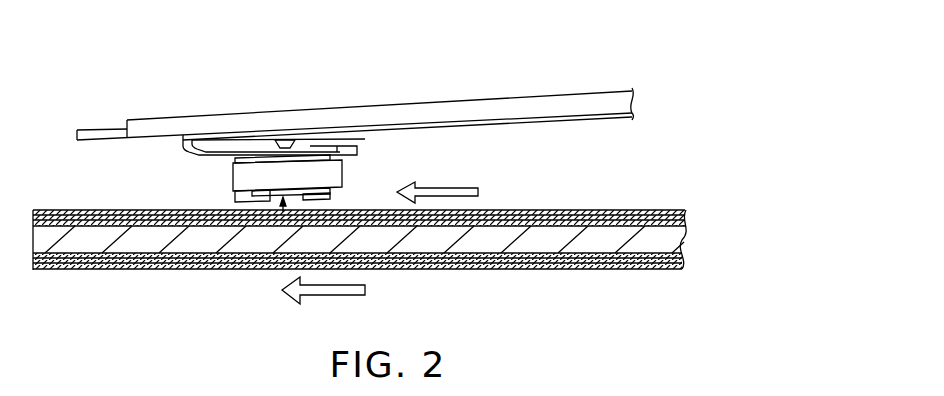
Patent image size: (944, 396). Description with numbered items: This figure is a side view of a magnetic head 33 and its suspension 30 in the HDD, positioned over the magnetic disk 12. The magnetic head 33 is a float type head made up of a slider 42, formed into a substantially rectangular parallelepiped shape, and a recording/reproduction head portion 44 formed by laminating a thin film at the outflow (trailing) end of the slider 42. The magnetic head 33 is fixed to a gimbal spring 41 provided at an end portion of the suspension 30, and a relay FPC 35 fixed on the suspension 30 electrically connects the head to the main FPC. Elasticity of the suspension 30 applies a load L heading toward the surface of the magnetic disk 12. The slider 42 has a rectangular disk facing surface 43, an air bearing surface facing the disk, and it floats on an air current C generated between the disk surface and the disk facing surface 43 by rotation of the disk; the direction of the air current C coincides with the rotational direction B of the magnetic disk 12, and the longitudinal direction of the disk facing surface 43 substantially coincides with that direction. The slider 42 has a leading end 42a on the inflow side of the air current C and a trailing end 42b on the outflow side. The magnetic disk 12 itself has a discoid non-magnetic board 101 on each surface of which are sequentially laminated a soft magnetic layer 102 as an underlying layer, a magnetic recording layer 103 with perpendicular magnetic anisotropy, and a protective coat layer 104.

The magnetic disk 12 is at (648, 196).
The suspension 30 is at (523, 97).
The magnetic head 33 is at (360, 176).
The relay FPC 35 is at (578, 121).
The gimbal spring 41 is at (347, 143).
The slider 42 is at (262, 168).
The leading end 42a is at (358, 160).
The trailing end 42b is at (234, 190).
The disk facing surface 43 is at (283, 212).
The head portion 44 is at (238, 178).
The board 101 is at (594, 248).
The soft magnetic layer 102 is at (686, 216).
The magnetic recording layer 103 is at (614, 209).
The protective coat layer 104 is at (684, 207).
The load L is at (281, 100).
The rotational direction B is at (323, 299).
The air current C is at (449, 192).